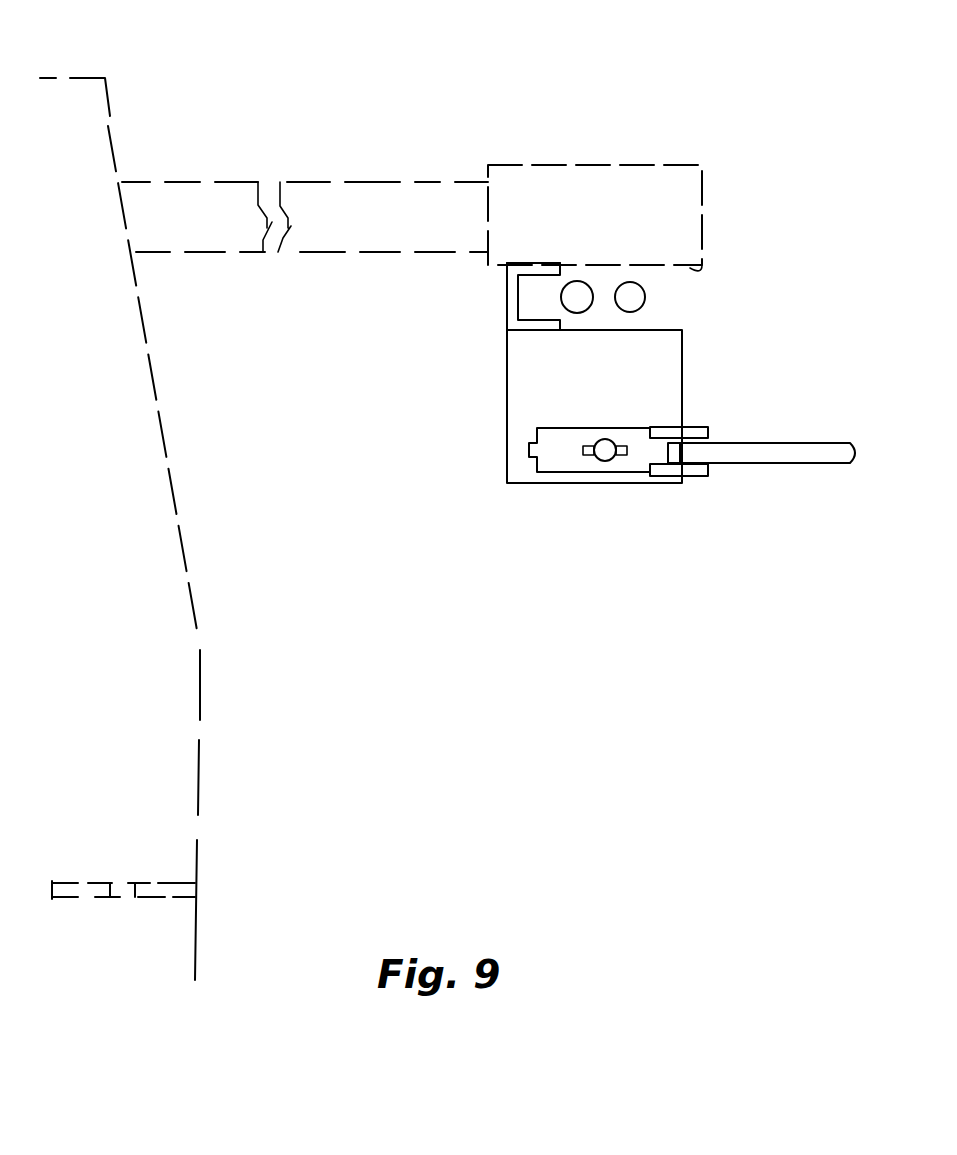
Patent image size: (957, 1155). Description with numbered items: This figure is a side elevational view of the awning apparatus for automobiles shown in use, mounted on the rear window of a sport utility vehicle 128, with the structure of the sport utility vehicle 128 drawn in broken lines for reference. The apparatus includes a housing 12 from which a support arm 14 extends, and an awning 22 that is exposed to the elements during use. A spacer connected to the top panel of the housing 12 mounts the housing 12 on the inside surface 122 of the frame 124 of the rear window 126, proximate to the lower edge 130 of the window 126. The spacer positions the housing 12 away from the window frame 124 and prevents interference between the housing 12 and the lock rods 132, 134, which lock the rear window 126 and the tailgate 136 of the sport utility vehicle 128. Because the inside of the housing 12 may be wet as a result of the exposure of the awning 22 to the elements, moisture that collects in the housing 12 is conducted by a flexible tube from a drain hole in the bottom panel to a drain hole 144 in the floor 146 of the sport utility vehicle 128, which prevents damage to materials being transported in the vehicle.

The housing 12 is at (533, 378).
The support arm 14 is at (792, 455).
The awning 22 is at (683, 353).
The inside surface 122 is at (682, 267).
The frame 124 is at (675, 165).
The rear window 126 is at (347, 190).
The sport utility vehicle 128 is at (108, 100).
The lower edge 130 is at (700, 268).
The lock rod 132 is at (647, 297).
The lock rod 134 is at (580, 307).
The tailgate 136 is at (202, 688).
The drain hole 144 is at (125, 884).
The floor 146 is at (173, 898).